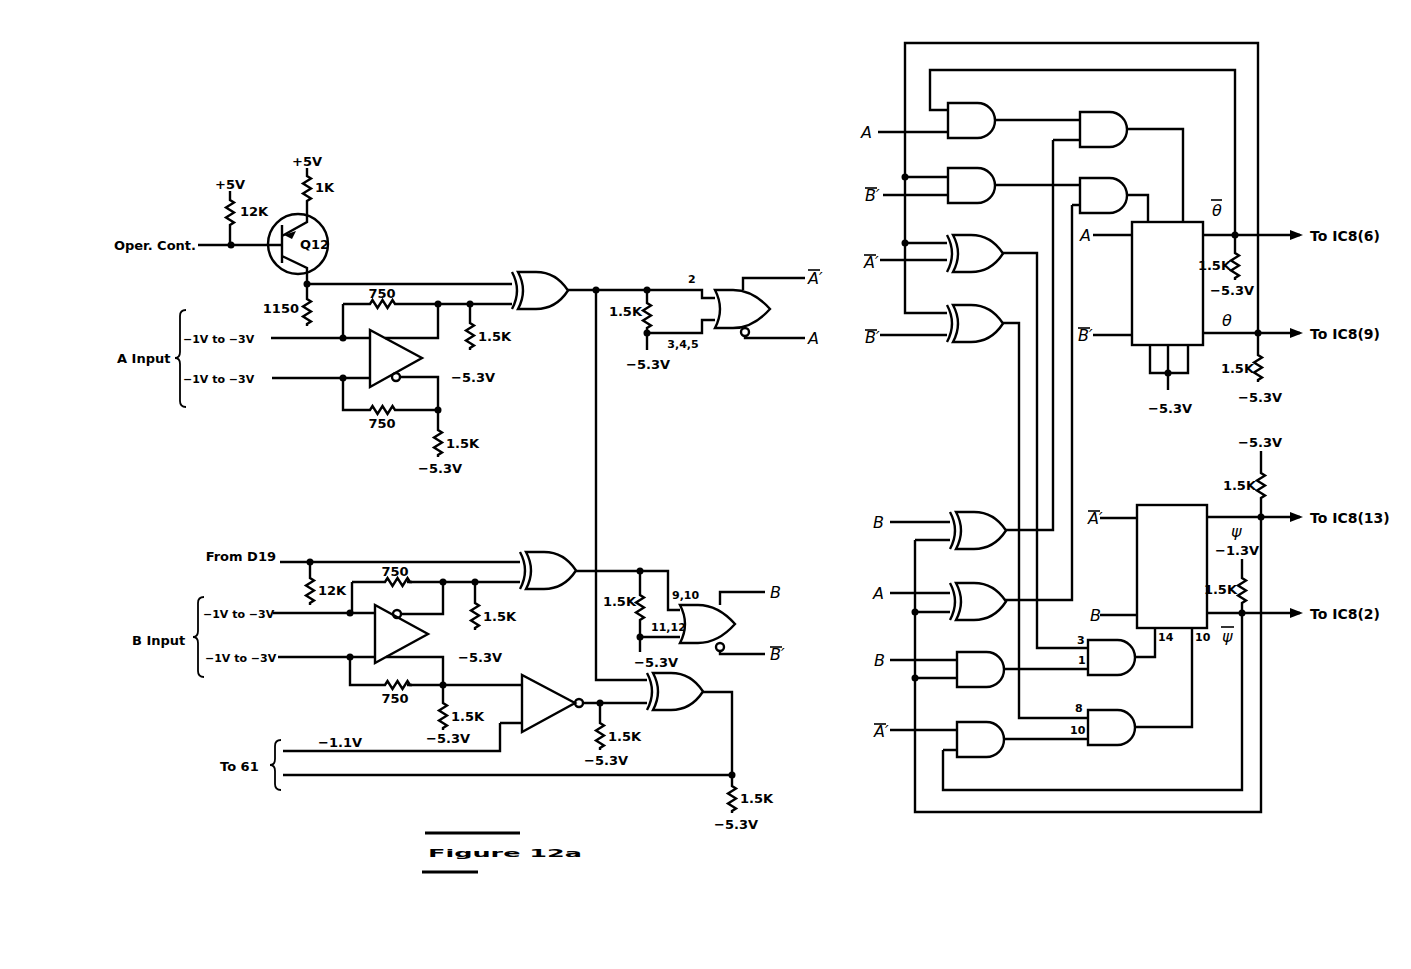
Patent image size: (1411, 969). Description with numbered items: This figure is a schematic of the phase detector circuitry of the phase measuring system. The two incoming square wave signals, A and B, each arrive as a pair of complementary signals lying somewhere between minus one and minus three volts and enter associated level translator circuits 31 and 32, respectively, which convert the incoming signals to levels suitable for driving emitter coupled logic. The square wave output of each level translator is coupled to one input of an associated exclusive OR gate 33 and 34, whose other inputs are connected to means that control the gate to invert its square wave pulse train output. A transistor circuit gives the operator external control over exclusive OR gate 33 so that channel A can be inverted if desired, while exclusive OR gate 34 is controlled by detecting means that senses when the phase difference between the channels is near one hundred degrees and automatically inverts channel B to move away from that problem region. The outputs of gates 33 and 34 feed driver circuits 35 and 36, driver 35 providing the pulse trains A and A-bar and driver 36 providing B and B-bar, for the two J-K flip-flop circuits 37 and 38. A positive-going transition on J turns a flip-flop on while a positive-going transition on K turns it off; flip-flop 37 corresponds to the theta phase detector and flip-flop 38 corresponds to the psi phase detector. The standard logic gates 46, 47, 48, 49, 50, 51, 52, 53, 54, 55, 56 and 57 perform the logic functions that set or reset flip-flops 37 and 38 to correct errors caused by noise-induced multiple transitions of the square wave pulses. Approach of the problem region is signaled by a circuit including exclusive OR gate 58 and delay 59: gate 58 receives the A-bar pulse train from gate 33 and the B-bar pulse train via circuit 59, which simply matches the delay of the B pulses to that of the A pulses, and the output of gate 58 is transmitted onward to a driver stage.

The level translator circuit 31 is at (422, 357).
The level translator circuit 32 is at (428, 634).
The exclusive OR gate 33 is at (538, 273).
The exclusive OR gate 34 is at (546, 553).
The driver circuit 35 is at (770, 309).
The driver circuit 36 is at (735, 624).
The J-K flip-flop circuit 37 is at (1132, 292).
The J-K flip-flop circuit 38 is at (1137, 566).
The gate 46 is at (972, 104).
The gate 47 is at (972, 169).
The gate 48 is at (972, 236).
The gate 49 is at (972, 306).
The gate 50 is at (975, 513).
The gate 51 is at (975, 584).
The gate 52 is at (980, 653).
The gate 53 is at (983, 723).
The gate 54 is at (1103, 113).
The gate 55 is at (1103, 179).
The gate 56 is at (1122, 675).
The gate 57 is at (1122, 745).
The exclusive OR gate 58 is at (688, 674).
The delay 59 is at (546, 677).